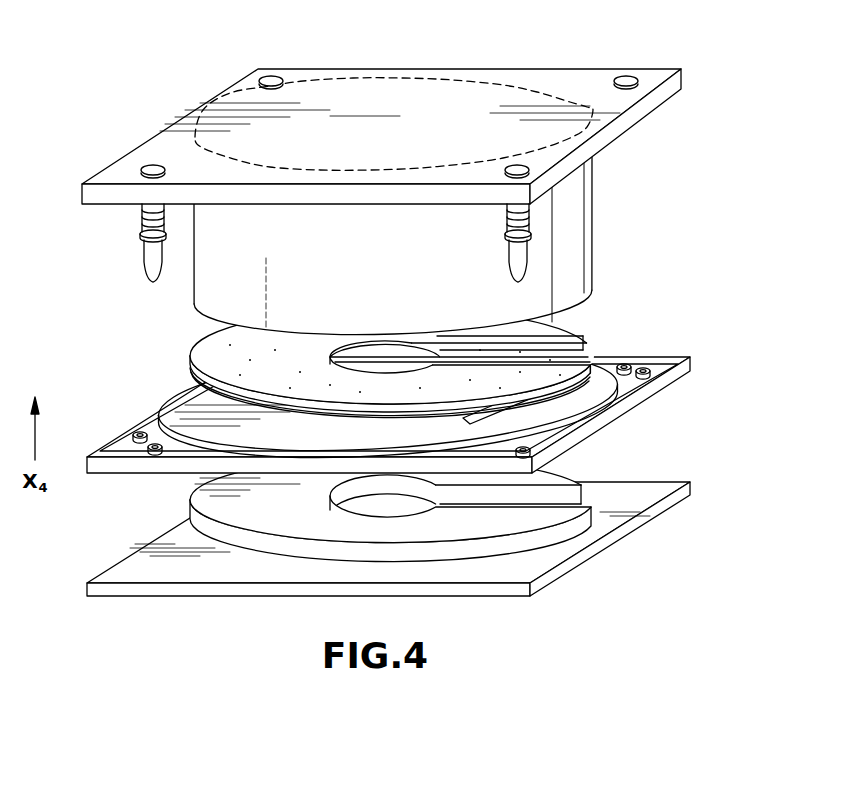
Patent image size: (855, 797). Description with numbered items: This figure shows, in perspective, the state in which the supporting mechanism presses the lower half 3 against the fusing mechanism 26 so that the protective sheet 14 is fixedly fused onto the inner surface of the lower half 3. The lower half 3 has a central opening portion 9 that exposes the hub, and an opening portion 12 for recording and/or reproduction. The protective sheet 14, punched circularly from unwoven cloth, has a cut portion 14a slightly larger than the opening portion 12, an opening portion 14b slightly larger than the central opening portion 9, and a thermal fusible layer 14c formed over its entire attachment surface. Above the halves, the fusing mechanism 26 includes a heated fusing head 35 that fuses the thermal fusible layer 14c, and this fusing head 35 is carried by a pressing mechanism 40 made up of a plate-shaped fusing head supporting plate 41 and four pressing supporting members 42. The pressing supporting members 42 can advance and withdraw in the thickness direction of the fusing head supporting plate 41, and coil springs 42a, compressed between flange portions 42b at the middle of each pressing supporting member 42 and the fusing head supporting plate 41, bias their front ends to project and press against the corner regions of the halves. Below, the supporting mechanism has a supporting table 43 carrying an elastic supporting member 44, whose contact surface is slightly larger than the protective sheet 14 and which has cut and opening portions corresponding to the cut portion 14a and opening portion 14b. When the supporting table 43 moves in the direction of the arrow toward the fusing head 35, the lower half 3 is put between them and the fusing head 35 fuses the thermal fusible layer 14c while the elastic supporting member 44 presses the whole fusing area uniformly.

The lower half 3 is at (592, 430).
The central opening portion 9 is at (393, 413).
The opening portion 12 is at (590, 398).
The protective sheet 14 is at (235, 362).
The cut portion 14a is at (478, 367).
The opening portion 14b is at (385, 366).
The thermal fusible layer 14c is at (190, 385).
The fusing mechanism 26 is at (389, 326).
The fusing head 35 is at (590, 275).
The pressing mechanism 40 is at (515, 80).
The fusing head supporting plate 41 is at (436, 72).
The pressing supporting member 42 is at (363, 175).
The coil spring 42a is at (142, 217).
The flange portion 42b is at (143, 240).
The supporting table 43 is at (245, 542).
The supporting member 44 is at (310, 543).